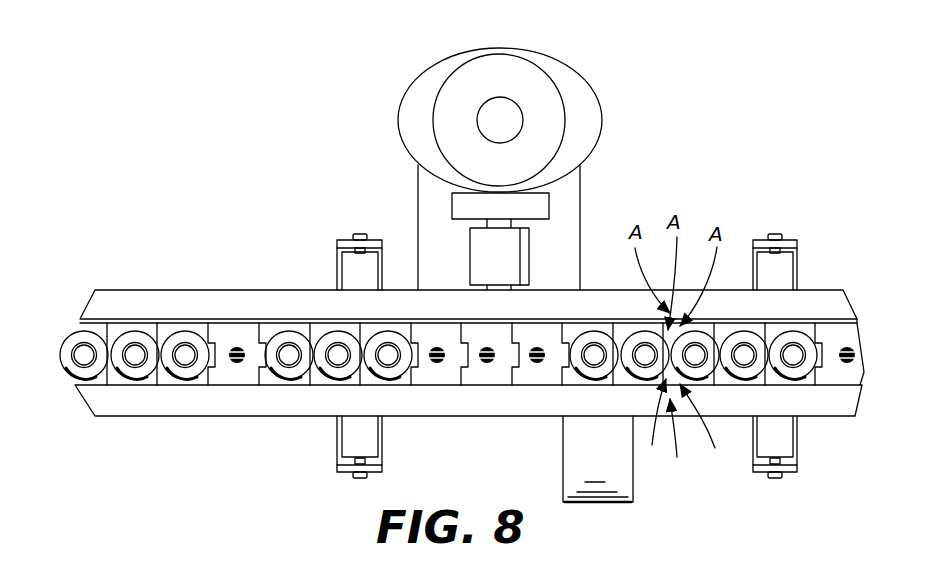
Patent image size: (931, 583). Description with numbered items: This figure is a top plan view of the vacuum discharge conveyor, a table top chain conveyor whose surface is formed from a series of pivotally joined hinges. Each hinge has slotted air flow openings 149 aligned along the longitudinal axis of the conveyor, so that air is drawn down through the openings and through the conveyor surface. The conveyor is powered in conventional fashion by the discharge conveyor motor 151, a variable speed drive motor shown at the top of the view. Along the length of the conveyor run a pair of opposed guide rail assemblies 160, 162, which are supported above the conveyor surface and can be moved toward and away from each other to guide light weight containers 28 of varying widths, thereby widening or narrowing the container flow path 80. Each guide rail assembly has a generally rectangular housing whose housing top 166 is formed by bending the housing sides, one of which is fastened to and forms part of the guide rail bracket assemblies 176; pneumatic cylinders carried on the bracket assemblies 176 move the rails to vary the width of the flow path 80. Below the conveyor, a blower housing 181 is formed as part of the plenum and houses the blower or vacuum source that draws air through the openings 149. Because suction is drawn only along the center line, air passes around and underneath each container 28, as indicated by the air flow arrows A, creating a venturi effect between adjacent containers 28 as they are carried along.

The discharge conveyor motor 151 is at (502, 70).
The guide rail assembly 160 is at (153, 287).
The guide rail assembly 162 is at (146, 419).
The housing top 166 is at (737, 407).
The container flow path 80 is at (41, 355).
The light weight container 28 is at (283, 372).
The slotted air flow opening 149 is at (237, 347).
The guide rail bracket assembly 176 is at (778, 221).
The blower housing 181 is at (623, 479).